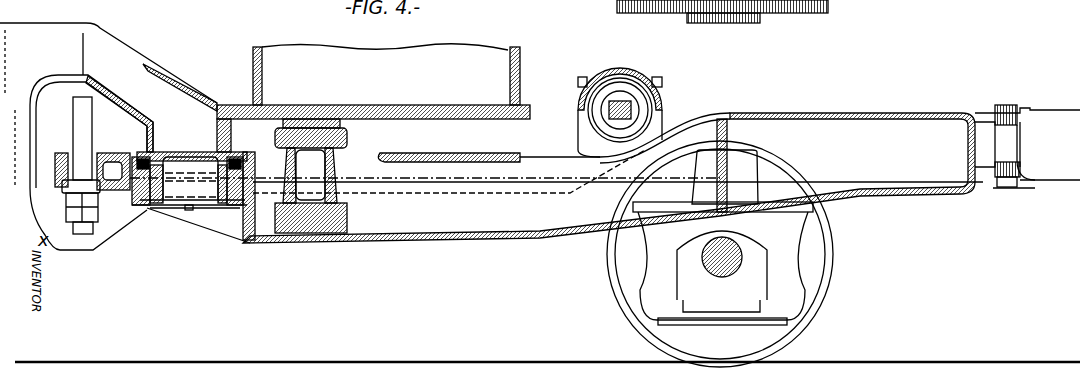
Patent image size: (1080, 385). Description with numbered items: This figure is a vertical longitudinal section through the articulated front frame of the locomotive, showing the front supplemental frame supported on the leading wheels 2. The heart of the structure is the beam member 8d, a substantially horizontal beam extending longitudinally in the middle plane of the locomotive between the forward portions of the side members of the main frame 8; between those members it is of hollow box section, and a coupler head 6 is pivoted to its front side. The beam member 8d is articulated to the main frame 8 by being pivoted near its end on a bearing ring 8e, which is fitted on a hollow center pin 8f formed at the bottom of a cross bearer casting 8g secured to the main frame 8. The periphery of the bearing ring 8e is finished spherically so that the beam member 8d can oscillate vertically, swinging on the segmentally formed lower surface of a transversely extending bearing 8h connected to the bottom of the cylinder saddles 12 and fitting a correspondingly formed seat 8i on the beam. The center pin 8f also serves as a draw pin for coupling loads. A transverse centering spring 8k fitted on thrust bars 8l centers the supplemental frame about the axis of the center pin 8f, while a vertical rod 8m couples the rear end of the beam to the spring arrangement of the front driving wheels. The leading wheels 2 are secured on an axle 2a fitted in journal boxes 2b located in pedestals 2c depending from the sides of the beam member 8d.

The main frame 8 is at (28, 42).
The cross bearer casting 8g is at (150, 66).
The cylinder saddles 12 is at (298, 60).
The vertical rod 8m is at (78, 142).
The hollow center pin 8f is at (213, 163).
The bearing ring 8e is at (140, 190).
The transversely extending bearing 8h is at (330, 187).
The seat 8i is at (340, 220).
The beam member 8d is at (510, 236).
The transverse centering spring 8k is at (620, 84).
The thrust bars 8l is at (632, 107).
The leading wheels 2 is at (790, 8).
The axle 2a is at (720, 268).
The journal boxes 2b is at (690, 260).
The pedestals 2c is at (787, 282).
The coupler head 6 is at (1033, 123).